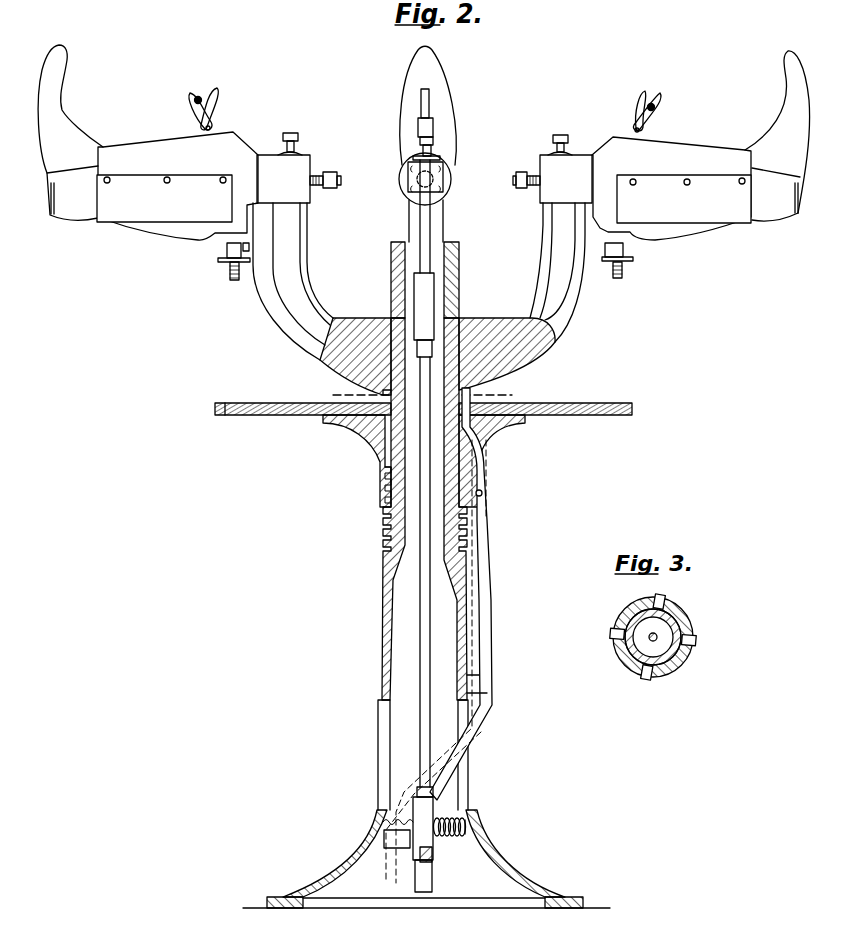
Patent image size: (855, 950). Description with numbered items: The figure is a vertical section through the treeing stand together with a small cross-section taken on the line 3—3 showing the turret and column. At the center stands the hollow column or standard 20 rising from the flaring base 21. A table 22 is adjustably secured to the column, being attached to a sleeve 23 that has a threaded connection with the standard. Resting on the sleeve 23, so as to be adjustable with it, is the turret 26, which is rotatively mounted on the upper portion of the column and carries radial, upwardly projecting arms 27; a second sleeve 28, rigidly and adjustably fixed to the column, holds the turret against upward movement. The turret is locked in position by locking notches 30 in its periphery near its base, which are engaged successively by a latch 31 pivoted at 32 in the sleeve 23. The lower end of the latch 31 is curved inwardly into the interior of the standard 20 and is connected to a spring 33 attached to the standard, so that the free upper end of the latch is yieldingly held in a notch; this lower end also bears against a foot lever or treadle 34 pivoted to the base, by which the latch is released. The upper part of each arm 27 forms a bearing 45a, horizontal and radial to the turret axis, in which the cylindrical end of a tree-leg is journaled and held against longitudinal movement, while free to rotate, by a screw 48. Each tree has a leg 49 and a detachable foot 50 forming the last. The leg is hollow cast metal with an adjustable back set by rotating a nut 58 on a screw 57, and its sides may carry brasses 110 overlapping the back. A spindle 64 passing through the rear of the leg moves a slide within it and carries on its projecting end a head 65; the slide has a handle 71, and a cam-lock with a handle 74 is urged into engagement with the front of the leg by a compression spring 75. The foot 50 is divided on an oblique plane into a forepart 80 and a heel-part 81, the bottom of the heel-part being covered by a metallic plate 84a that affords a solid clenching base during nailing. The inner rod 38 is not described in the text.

In FIG. 2, the hollow column or standard 20 is at (384, 663).
In FIG. 3, the hollow column or standard 20 is at (630, 662).
In FIG. 2, the flaring base 21 is at (544, 897).
In FIG. 2, the table 22 is at (580, 416).
In FIG. 2, the sleeve 23 is at (377, 437).
In FIG. 2, the turret 26 is at (467, 323).
In FIG. 3, the turret 26 is at (684, 656).
In FIG. 2, the arms 27 is at (292, 242).
In FIG. 2, the sleeve 28 is at (391, 282).
In FIG. 2, the locking notches 30 is at (383, 393).
In FIG. 3, the locking notches 30 is at (691, 633).
In FIG. 2, the latch 31 is at (480, 463).
In FIG. 2, the pivot 32 is at (483, 493).
In FIG. 2, the spring 33 is at (450, 837).
In FIG. 2, the foot lever or treadle 34 is at (431, 865).
In FIG. 2, the rod 38 is at (420, 622).
In FIG. 2, the bearings 45a is at (305, 162).
In FIG. 2, the screw 48 is at (290, 136).
In FIG. 2, the leg 49 is at (138, 148).
In FIG. 2, the foot 50 is at (443, 103).
In FIG. 2, the screw 57 is at (227, 278).
In FIG. 2, the nut 58 is at (217, 259).
In FIG. 2, the spindle 64 is at (340, 174).
In FIG. 2, the head 65 is at (329, 184).
In FIG. 2, the handle 71 is at (208, 96).
In FIG. 2, the handle 74 is at (188, 99).
In FIG. 2, the compression spring 75 is at (198, 98).
In FIG. 2, the forepart 80 is at (60, 88).
In FIG. 2, the heel-part 81 is at (80, 216).
In FIG. 2, the metallic plate 84a is at (802, 214).
In FIG. 2, the brasses 110 is at (143, 208).
In FIG. 2, the section line 3— 3 is at (422, 391).